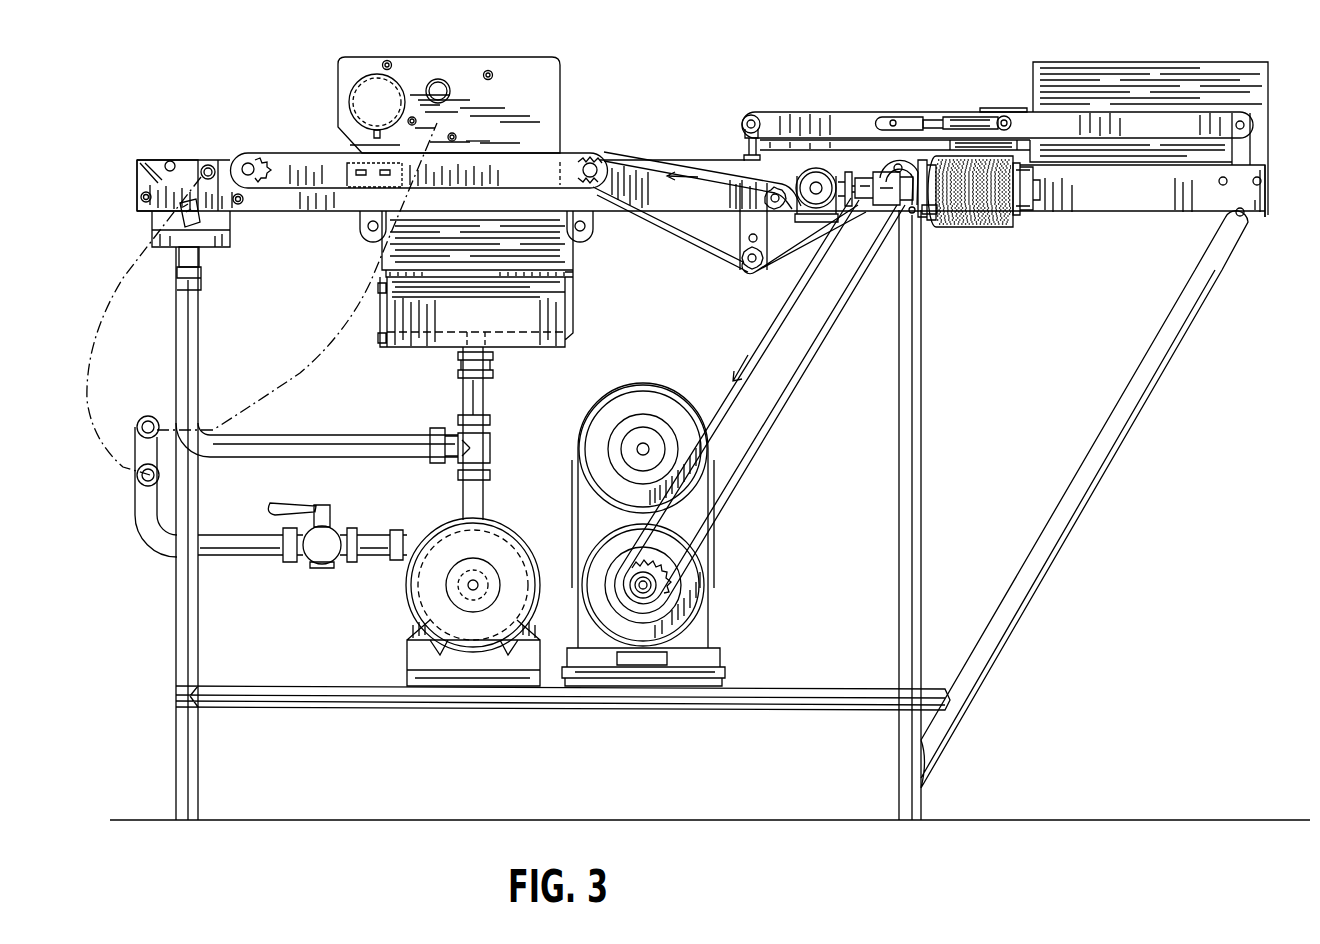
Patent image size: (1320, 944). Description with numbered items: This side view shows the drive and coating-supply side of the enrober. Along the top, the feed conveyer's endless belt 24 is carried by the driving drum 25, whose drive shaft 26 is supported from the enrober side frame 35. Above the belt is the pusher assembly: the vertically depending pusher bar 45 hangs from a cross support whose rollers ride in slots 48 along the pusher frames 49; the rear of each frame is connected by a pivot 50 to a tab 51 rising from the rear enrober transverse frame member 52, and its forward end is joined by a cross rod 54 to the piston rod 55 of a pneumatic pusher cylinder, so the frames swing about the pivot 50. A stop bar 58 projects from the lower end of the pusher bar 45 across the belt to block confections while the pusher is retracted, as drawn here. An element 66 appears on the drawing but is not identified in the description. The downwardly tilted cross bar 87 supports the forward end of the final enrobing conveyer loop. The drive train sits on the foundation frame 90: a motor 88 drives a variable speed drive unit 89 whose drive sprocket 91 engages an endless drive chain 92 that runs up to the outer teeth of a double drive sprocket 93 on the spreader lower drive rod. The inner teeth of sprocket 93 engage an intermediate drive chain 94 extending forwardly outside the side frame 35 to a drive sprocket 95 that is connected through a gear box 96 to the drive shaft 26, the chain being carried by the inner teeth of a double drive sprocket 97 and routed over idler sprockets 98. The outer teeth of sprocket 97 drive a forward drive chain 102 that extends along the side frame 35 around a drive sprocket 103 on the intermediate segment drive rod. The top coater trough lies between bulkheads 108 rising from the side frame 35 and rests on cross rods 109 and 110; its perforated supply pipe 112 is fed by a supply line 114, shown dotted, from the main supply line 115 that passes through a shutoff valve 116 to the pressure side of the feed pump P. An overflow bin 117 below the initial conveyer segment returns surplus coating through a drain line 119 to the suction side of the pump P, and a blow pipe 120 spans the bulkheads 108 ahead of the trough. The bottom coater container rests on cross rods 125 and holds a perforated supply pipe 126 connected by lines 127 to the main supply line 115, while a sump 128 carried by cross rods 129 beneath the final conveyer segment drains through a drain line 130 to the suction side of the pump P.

The endless belt 24 is at (1012, 186).
The driving drum 25 is at (1022, 218).
The drive shaft 26 is at (933, 228).
The enrober side frame 35 is at (326, 205).
The pusher bar 45 is at (1018, 140).
The slots 48 is at (892, 115).
The pusher frames 49 is at (808, 112).
The pivot 50 is at (1246, 126).
The tab 51 is at (1243, 152).
The rear enrober transverse frame member 52 is at (1268, 188).
The cross rod 54 is at (746, 115).
The piston rod 55 is at (748, 146).
The stop bar 58 is at (968, 138).
The pivot lever 66 is at (900, 166).
The cross bar 87 is at (137, 180).
The motor 88 is at (648, 395).
The variable speed drive unit 89 is at (700, 608).
The foundation frame 90 is at (905, 652).
The drive sprocket 91 is at (690, 566).
The endless drive chain 92 is at (762, 443).
The double drive sprocket 93 is at (886, 172).
The intermediate drive chain 94 is at (680, 166).
The drive sprocket 95 is at (814, 175).
The gear box 96 is at (848, 172).
The double drive sprocket 97 is at (592, 160).
The idler sprockets 98 is at (756, 240).
The forward drive chain 102 is at (302, 148).
The drive sprocket 103 is at (265, 170).
The bulkheads 108 is at (478, 130).
The cross rod 109 is at (392, 66).
The rear cross rod 110 is at (494, 76).
The supply pipe 112 is at (440, 80).
The supply line 114 is at (305, 378).
The main supply line 115 is at (160, 548).
The shutoff valve 116 is at (314, 558).
The overflow bin 117 is at (560, 250).
The drain line 119 is at (480, 408).
The blow pipe 120 is at (364, 95).
The cross rods 125 is at (170, 161).
The perforated supply pipe 126 is at (209, 165).
The lines 127 is at (110, 358).
The sump 128 is at (222, 220).
The cross rods 129 is at (141, 198).
The drain line 130 is at (196, 305).
The feed pump P is at (440, 600).